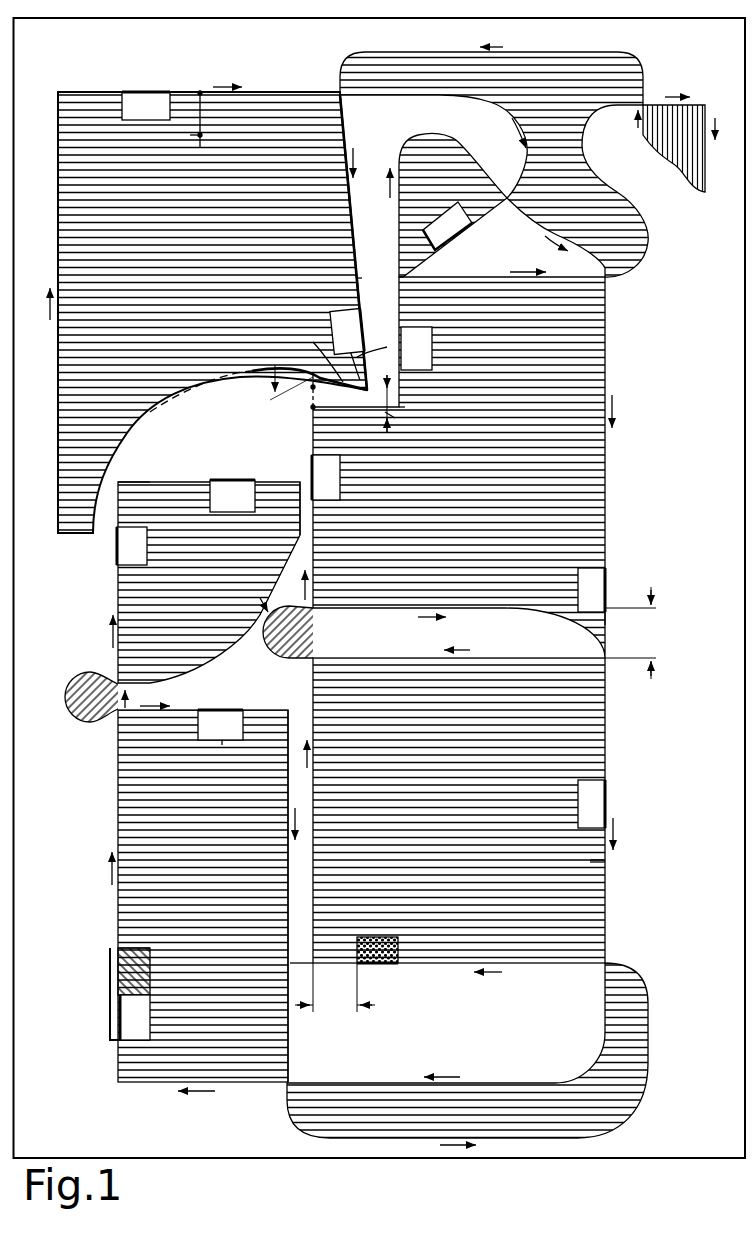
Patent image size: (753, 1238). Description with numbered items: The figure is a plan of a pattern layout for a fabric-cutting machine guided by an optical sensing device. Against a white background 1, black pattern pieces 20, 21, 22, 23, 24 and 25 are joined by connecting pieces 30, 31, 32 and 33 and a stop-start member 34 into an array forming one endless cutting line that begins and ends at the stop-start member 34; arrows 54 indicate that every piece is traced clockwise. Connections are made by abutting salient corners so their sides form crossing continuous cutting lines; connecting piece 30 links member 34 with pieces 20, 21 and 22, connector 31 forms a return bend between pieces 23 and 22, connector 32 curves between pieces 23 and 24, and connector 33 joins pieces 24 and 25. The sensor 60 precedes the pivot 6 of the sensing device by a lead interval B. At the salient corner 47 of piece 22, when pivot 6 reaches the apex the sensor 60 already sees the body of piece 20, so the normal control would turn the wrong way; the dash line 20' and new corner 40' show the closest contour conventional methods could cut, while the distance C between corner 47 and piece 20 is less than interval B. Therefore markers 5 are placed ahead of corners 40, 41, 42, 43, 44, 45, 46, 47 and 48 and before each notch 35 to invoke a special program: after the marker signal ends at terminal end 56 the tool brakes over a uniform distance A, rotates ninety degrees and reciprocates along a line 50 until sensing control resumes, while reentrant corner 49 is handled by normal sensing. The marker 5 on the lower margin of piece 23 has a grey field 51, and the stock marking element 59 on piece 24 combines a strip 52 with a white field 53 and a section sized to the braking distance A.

The background 1 is at (658, 363).
The marker 5 is at (146, 90).
The sensing device pivot 6 is at (300, 403).
The pattern piece 20 is at (212, 312).
The dash line 20' is at (201, 360).
The pattern piece 21 is at (413, 152).
The pattern piece 22 is at (605, 492).
The pattern piece 23 is at (605, 725).
The pattern piece 24 is at (203, 885).
The pattern piece 25 is at (127, 610).
The connecting piece 30 is at (553, 78).
The connecting piece 31 is at (280, 641).
The connecting piece 32 is at (640, 1068).
The connecting piece 33 is at (78, 718).
The stop-start member 34 is at (700, 105).
The notch 35 is at (205, 100).
The salient corner 40 is at (330, 350).
The new corner 40' is at (377, 338).
The salient corner 41 is at (428, 252).
The corner 42 is at (605, 628).
The corner 43 is at (120, 482).
The corner 44 is at (300, 498).
The corner 45 is at (300, 712).
The salient corner 46 is at (290, 965).
The salient corner 47 is at (313, 422).
The corner 48 is at (357, 278).
The reentrant corner 49 is at (405, 408).
The line 50 is at (200, 135).
The field 51 is at (398, 950).
The strip 52 is at (198, 716).
The white field 53 is at (222, 742).
The arrows 54 is at (506, 42).
The terminal end 56 is at (118, 950).
The marking element 59 is at (95, 1022).
The sensor 60 is at (290, 375).
The distance A is at (477, 800).
The lead interval B is at (272, 394).
The distance C is at (392, 405).